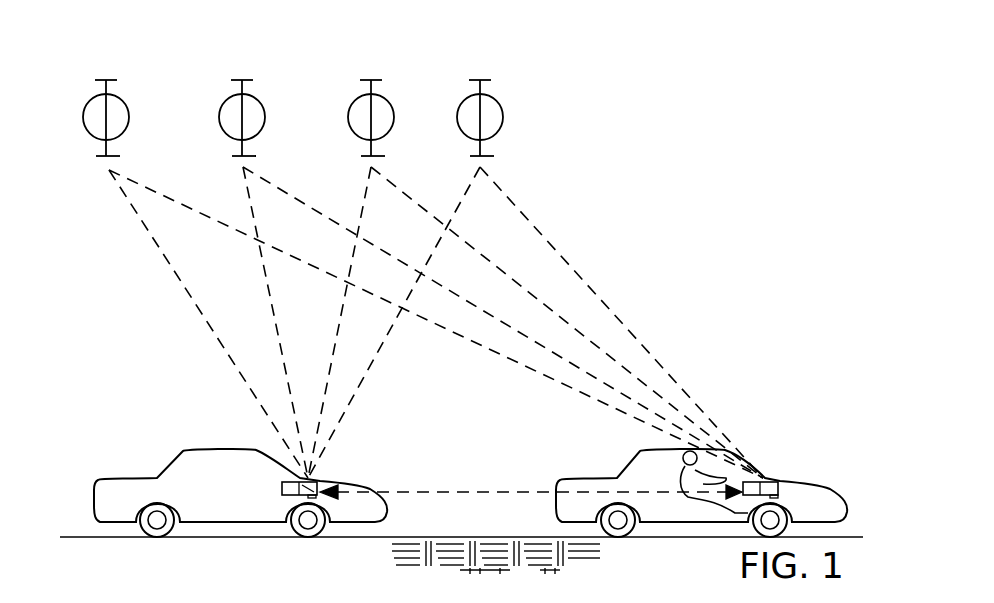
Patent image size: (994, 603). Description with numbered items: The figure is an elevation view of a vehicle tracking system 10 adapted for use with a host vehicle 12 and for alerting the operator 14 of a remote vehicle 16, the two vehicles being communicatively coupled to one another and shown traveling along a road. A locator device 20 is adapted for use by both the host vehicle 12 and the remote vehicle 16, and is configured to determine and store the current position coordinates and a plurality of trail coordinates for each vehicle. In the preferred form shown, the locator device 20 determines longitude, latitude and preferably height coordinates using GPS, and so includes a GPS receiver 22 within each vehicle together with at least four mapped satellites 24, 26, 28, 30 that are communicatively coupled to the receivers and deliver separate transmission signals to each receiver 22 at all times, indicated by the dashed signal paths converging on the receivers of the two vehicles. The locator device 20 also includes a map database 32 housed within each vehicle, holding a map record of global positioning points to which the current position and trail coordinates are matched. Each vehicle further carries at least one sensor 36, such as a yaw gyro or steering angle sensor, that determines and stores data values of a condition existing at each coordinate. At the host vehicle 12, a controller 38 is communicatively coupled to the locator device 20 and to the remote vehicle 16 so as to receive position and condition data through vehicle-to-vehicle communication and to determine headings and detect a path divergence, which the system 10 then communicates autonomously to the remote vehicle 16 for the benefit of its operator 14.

The vehicle tracking system 10 is at (747, 249).
The host vehicle 12 is at (154, 478).
The operator 14 is at (651, 472).
The remote vehicle 16 is at (800, 484).
The locator device 20 is at (121, 262).
The GPS receiver 22 is at (312, 478).
The mapped satellite 24 is at (125, 102).
The mapped satellite 26 is at (261, 102).
The mapped satellite 28 is at (390, 102).
The mapped satellite 30 is at (499, 102).
The map database 32 is at (313, 479).
The sensor 36 is at (779, 481).
The controller 38 is at (315, 481).